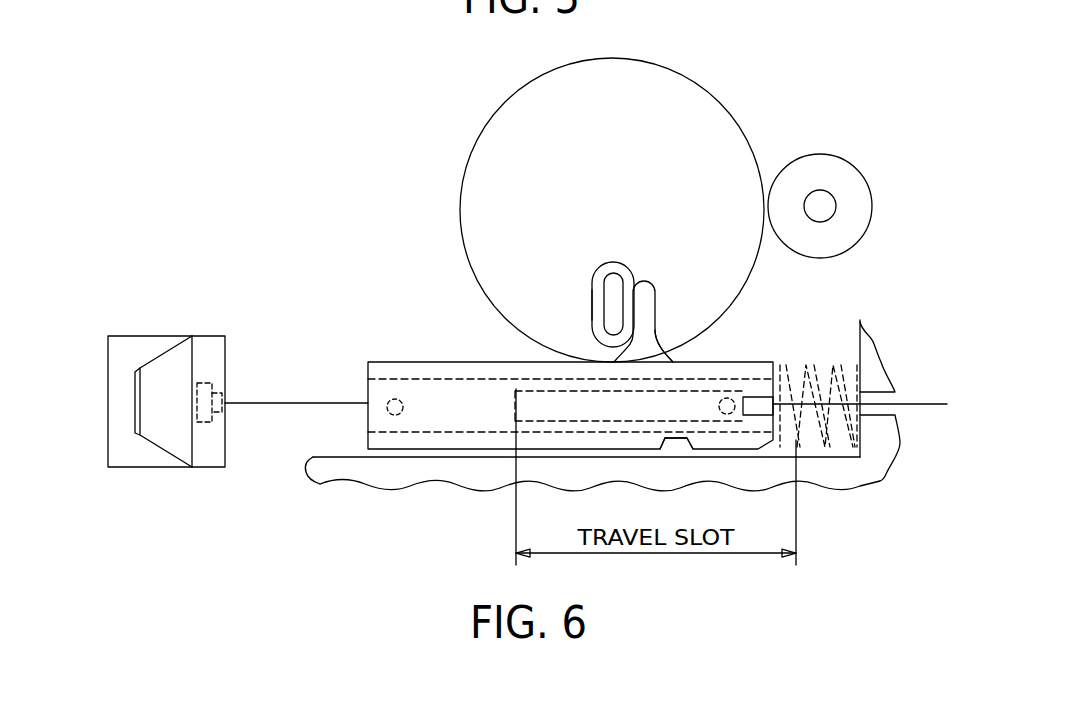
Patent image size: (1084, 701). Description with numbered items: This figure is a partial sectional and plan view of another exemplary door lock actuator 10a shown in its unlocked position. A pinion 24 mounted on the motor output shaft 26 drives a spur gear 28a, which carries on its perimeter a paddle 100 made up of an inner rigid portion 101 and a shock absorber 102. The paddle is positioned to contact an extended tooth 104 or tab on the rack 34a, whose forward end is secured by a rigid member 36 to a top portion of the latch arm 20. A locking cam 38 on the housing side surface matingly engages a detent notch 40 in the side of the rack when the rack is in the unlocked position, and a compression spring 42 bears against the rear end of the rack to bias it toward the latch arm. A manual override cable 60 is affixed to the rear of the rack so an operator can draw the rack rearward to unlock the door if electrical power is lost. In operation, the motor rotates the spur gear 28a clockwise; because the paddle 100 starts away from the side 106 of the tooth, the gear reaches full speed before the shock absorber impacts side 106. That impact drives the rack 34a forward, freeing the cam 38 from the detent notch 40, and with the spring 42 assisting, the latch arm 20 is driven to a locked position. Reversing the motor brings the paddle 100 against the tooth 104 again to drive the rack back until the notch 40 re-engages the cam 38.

The actuator 10a is at (384, 203).
The spur gear 28a is at (662, 70).
The pinion 24 is at (792, 170).
The motor output shaft 26 is at (830, 190).
The paddle 100 is at (595, 250).
The inner rigid portion 101 is at (625, 258).
The shock absorber 102 is at (593, 295).
The extended tooth 104 is at (667, 284).
The side of the tooth 106 is at (640, 358).
The latch arm 20 is at (224, 365).
The rigid member 36 is at (302, 402).
The rack 34a is at (472, 362).
The detent notch 40 is at (667, 445).
The locking cam 38 is at (676, 447).
The compression spring 42 is at (818, 365).
The manual override cable 60 is at (918, 403).